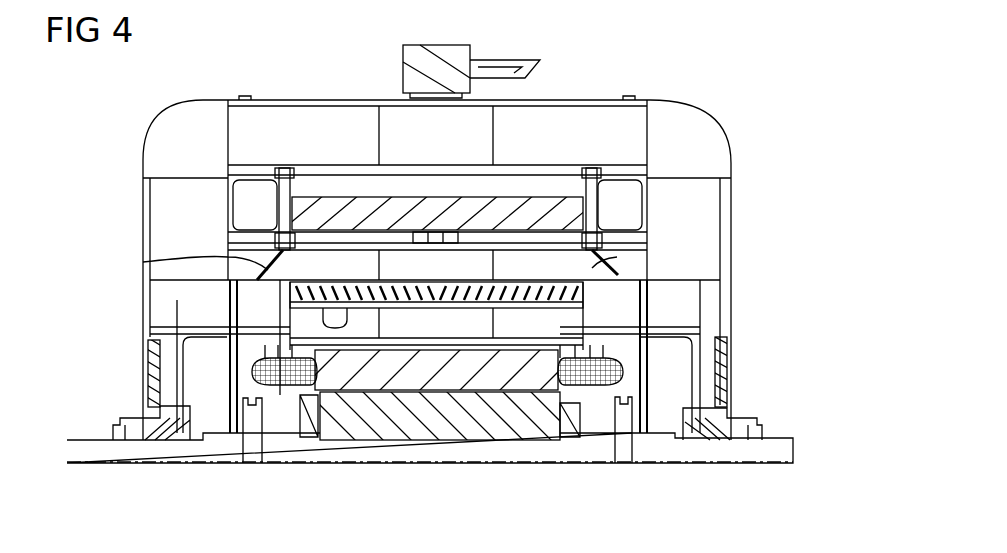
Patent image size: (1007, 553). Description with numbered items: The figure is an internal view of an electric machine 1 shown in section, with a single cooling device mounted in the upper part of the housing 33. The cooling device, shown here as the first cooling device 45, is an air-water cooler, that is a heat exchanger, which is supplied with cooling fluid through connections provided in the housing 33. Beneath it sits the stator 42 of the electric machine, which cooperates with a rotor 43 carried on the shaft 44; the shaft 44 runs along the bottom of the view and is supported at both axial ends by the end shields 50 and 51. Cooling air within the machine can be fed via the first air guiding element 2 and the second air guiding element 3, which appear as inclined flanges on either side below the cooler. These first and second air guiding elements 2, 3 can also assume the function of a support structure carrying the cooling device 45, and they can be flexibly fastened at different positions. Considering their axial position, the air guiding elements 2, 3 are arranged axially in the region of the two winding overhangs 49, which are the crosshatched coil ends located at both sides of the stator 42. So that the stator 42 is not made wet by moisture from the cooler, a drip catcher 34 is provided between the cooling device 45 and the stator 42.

The electric machine 1 is at (740, 100).
The first air guiding element 2 is at (617, 257).
The second air guiding element 3 is at (143, 262).
The housing 33 is at (708, 218).
The drip catcher 34 is at (358, 282).
The stator 42 is at (370, 380).
The rotor 43 is at (455, 430).
The shaft 44 is at (735, 452).
The first cooling device 45 is at (518, 210).
The winding overhangs 49 is at (273, 385).
The end shield 50 is at (720, 373).
The end shield 51 is at (152, 377).